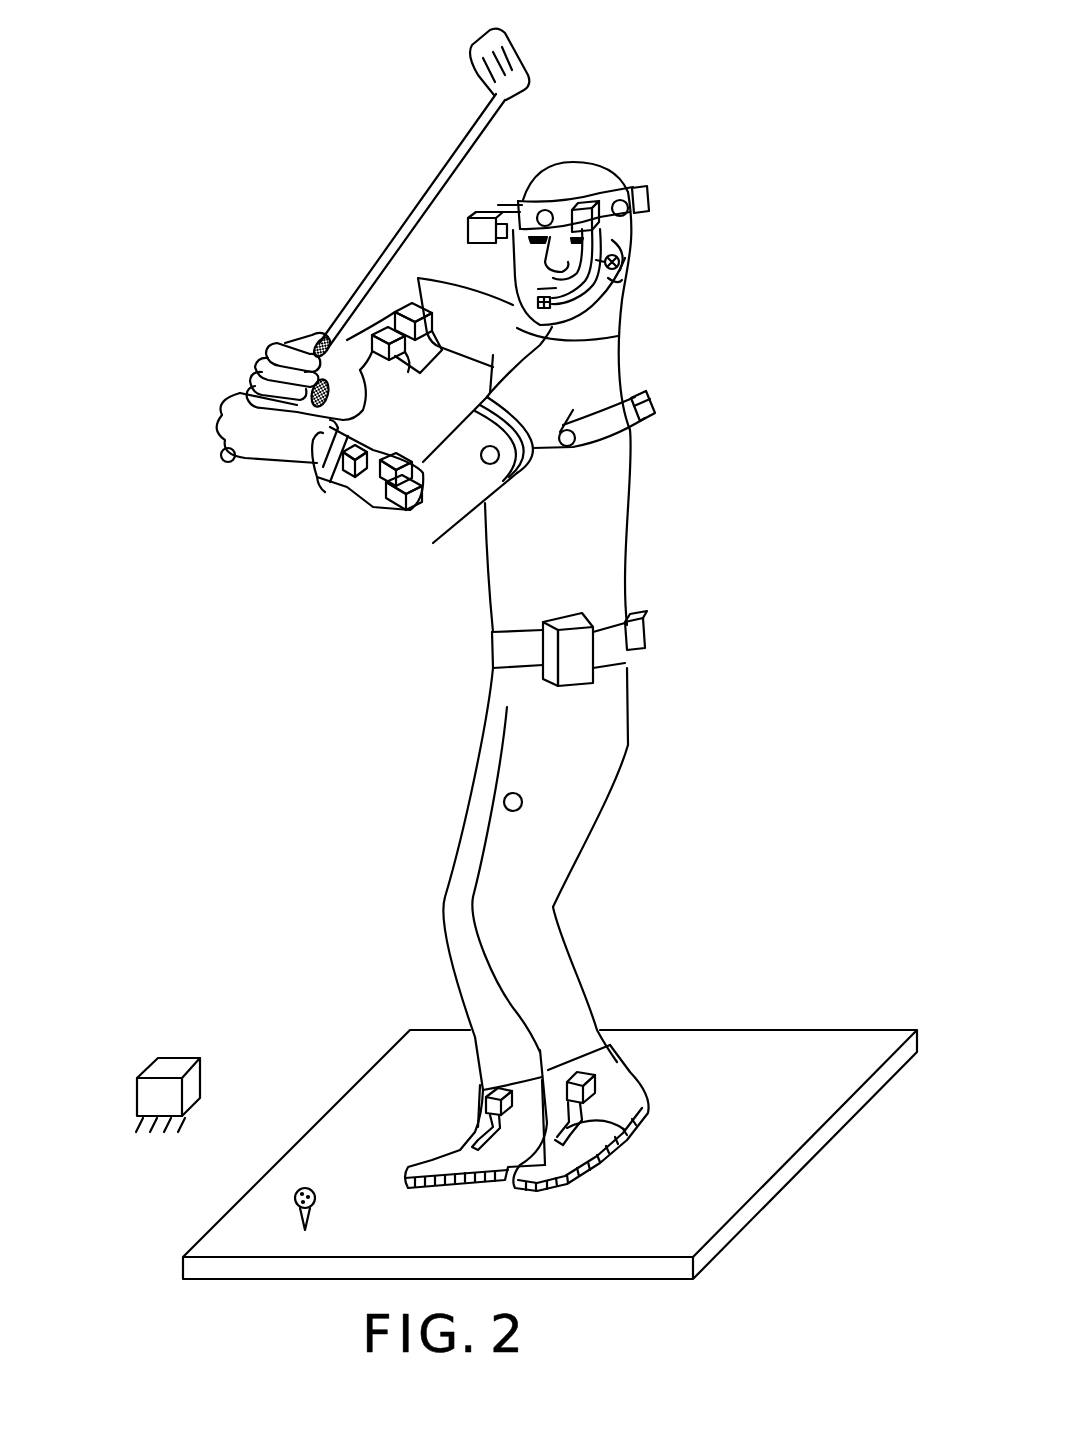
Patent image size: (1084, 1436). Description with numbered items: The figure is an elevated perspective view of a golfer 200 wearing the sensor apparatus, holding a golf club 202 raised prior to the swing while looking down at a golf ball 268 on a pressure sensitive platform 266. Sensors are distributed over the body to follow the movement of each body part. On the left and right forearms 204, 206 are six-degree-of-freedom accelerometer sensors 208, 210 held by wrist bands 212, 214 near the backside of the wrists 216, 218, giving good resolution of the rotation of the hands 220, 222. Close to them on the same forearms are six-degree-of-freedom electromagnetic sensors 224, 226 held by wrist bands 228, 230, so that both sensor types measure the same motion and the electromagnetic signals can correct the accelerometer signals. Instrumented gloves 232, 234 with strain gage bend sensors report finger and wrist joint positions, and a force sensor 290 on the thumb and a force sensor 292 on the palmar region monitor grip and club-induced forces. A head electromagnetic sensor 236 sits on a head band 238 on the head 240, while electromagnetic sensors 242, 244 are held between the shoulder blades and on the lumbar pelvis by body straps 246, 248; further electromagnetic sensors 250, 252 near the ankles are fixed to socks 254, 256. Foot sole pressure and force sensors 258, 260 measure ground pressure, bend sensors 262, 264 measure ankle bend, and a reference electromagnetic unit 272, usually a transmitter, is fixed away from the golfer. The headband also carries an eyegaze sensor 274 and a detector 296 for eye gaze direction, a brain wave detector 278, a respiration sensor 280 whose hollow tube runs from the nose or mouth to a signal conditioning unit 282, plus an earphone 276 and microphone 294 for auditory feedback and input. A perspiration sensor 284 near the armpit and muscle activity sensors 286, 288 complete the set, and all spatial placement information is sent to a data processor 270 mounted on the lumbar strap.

The golfer 200 is at (642, 540).
The golf club 202 is at (455, 162).
The left forearm 204 is at (353, 487).
The right forearm 206 is at (383, 333).
The 6-DOF-A 208 is at (397, 505).
The 6-DOF-A 210 is at (398, 306).
The wrist band 212 is at (362, 505).
The wrist band 214 is at (421, 277).
The wrist 216 is at (305, 478).
The wrist 218 is at (300, 342).
The hand 220 is at (267, 453).
The hand 222 is at (267, 355).
The 6-DOF-E 224 is at (310, 483).
The 6-DOF-E 226 is at (318, 335).
The wrist band 228 is at (320, 473).
The wrist band 230 is at (377, 363).
The instrumented glove 232 is at (247, 433).
The instrumented glove 234 is at (258, 398).
The head 6-DOF-E sensor 236 is at (649, 199).
The head band 238 is at (636, 237).
The head 240 is at (572, 173).
The 6-DOF-E sensor 242 is at (653, 407).
The 6-DOF-E sensor 244 is at (648, 633).
The body strap 246 is at (648, 420).
The body strap 248 is at (608, 680).
The 6-DOF-E sensor 250 is at (622, 1058).
The 6-DOF-E sensor 252 is at (483, 1090).
The sock 254 is at (620, 1102).
The sock 256 is at (450, 1160).
The foot sole pressure and force sensor 258 is at (607, 1168).
The foot sole pressure and force sensor 260 is at (453, 1181).
The bend sensor 262 is at (625, 1130).
The bend sensor 264 is at (470, 1140).
The pressure sensitive platform 266 is at (828, 1045).
The golf ball 268 is at (294, 1199).
The data processor 270 is at (588, 682).
The reference 6-DOF-E 272 is at (170, 1062).
The eyegaze sensor 274 is at (470, 211).
The earphone 276 is at (622, 272).
The detector 278 is at (635, 190).
The respiration sensor 280 is at (550, 307).
The signal conditioning unit 282 is at (589, 206).
The perspiration sensor 284 is at (533, 448).
The muscle activity sensor 286 is at (488, 463).
The muscle activity sensor 288 is at (503, 805).
The force sensor 290 is at (302, 345).
The force sensor 292 is at (310, 393).
The microphone 294 is at (545, 325).
The detector 296 is at (545, 209).